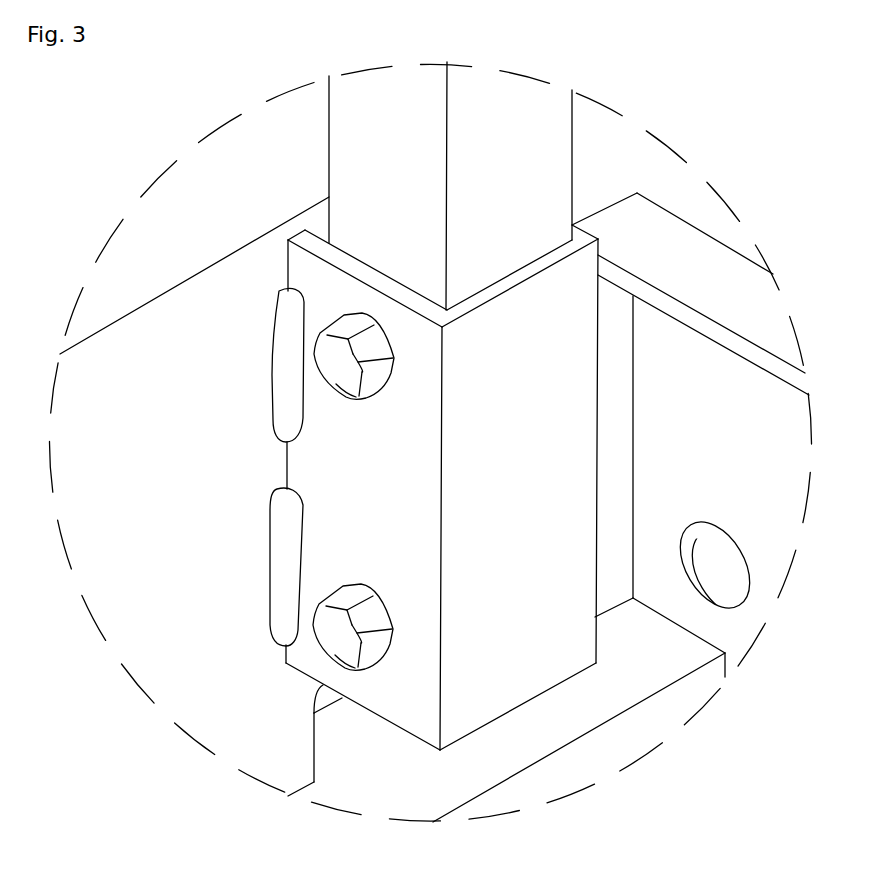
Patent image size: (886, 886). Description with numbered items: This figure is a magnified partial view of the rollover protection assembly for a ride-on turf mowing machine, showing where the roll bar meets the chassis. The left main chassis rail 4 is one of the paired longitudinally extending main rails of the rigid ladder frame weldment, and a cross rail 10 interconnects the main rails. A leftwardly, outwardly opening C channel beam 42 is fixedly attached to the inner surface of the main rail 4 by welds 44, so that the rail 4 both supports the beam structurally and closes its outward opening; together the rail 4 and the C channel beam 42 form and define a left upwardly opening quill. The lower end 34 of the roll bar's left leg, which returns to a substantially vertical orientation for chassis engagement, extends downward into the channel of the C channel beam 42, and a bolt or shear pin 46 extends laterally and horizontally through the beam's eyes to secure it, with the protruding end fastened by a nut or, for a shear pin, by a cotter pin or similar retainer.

The left main chassis rail 4 is at (393, 544).
The cross rail 10 is at (748, 472).
The lower end of leg 34 is at (487, 168).
The C channel beam 42 is at (505, 625).
The welds 44 is at (280, 568).
The bolt or shear pin 46 is at (330, 637).